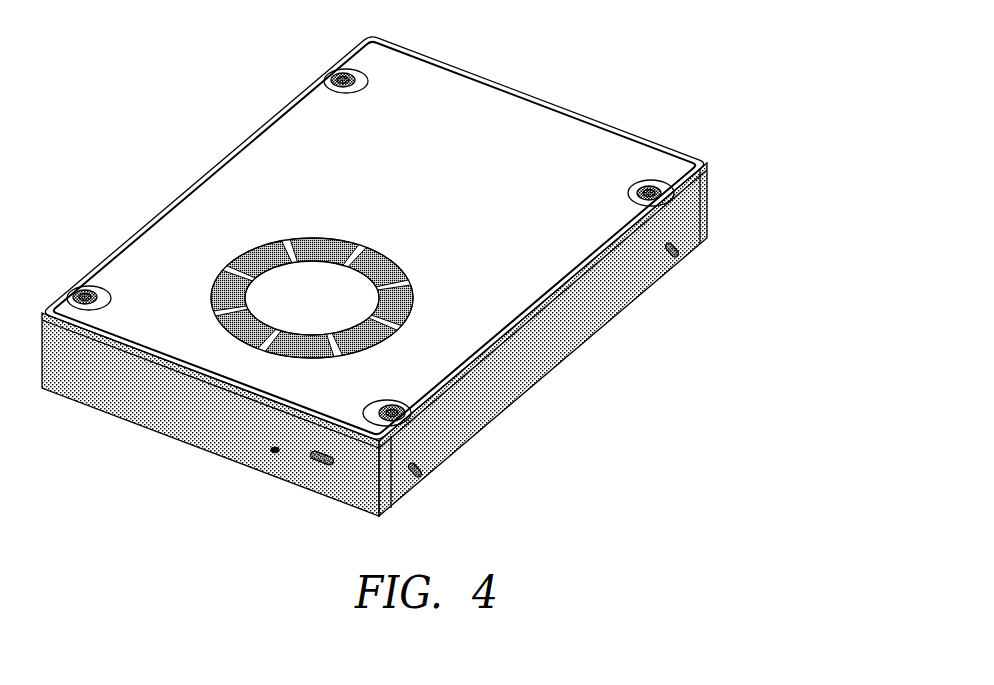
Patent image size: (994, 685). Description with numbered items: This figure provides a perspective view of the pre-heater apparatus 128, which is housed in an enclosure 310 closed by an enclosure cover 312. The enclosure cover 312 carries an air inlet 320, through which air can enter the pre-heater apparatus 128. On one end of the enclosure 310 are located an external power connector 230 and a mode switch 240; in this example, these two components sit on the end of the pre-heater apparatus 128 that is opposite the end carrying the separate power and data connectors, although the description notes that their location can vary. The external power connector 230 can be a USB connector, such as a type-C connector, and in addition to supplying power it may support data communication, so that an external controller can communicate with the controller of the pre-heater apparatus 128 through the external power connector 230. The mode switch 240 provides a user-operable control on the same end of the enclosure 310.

The pre-heater apparatus 128 is at (491, 279).
The enclosure 310 is at (686, 210).
The enclosure cover 312 is at (588, 131).
The air inlet 320 is at (266, 258).
The mode switch 240 is at (272, 453).
The external power connector 230 is at (327, 463).